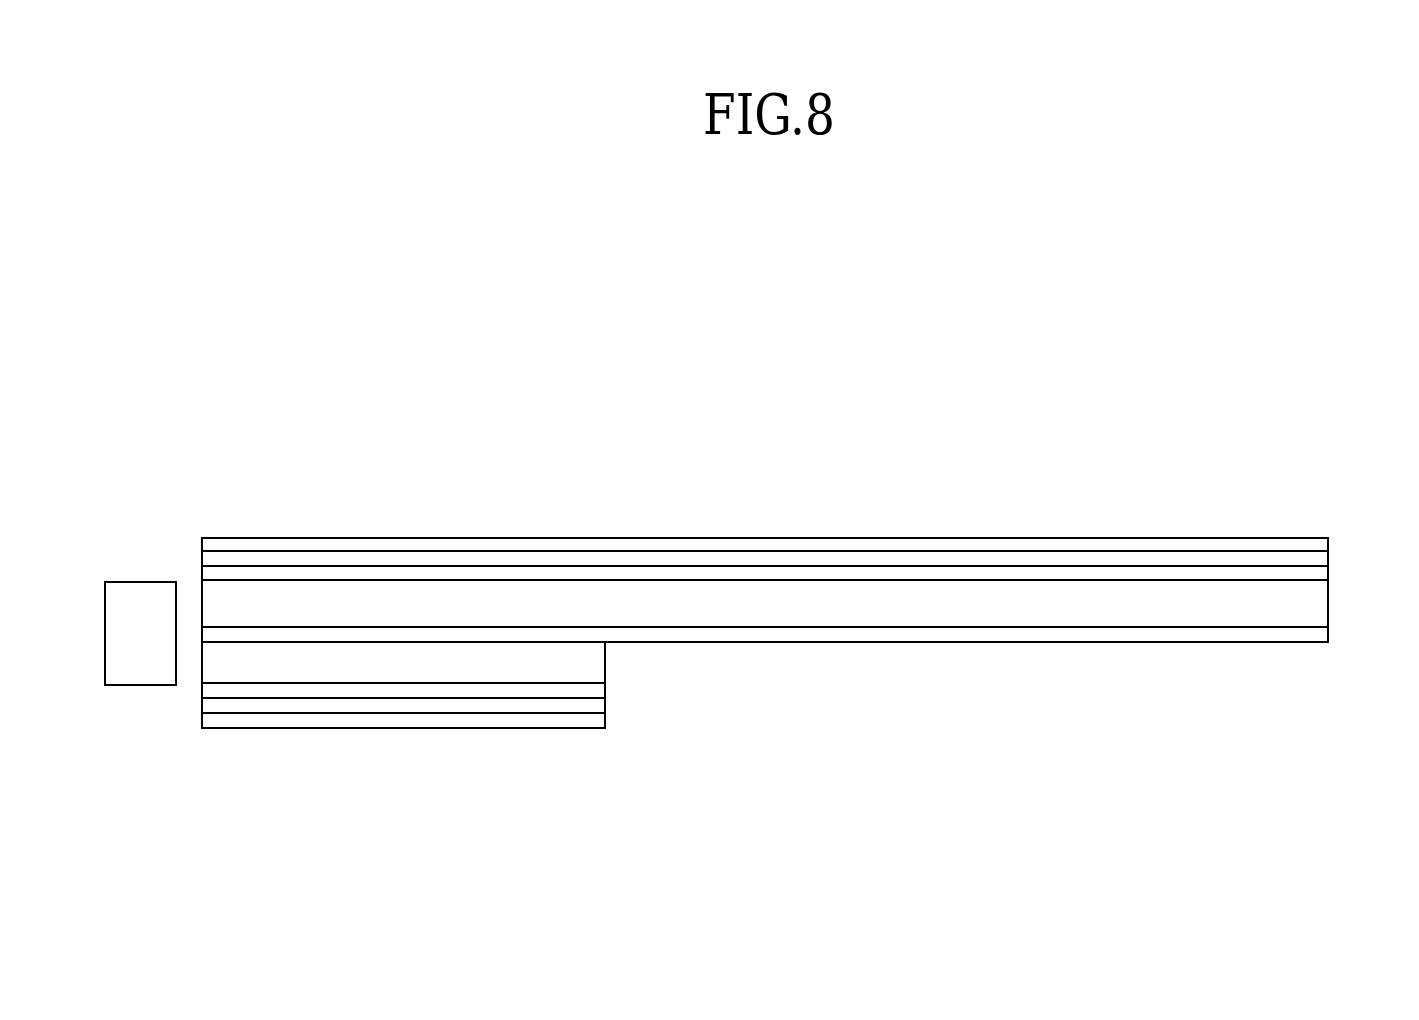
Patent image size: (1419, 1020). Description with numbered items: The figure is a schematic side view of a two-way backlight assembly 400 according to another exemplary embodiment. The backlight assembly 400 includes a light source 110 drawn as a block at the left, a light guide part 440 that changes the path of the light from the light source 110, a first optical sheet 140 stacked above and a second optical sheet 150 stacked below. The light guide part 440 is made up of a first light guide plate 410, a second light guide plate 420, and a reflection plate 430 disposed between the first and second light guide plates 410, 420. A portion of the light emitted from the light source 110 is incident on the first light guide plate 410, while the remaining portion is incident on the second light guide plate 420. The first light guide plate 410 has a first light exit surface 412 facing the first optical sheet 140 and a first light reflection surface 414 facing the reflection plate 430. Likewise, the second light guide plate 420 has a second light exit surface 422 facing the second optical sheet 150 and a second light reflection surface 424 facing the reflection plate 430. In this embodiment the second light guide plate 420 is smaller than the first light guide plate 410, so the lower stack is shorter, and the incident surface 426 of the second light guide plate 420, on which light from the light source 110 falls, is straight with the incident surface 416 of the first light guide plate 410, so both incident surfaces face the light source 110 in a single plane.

The backlight assembly 400 is at (722, 483).
The light source 110 is at (157, 587).
The incident surface of the first light guide plate 416 is at (202, 595).
The first optical sheet 140 is at (1336, 537).
The first light exit surface 412 is at (328, 580).
The first light reflection surface 414 is at (450, 627).
The first light guide plate 410 is at (1018, 602).
The reflection plate 430 is at (1097, 633).
The second light guide plate 420 is at (593, 664).
The light guide part 440 is at (1118, 756).
The second optical sheet 150 is at (611, 683).
The incident surface of the second light guide plate 426 is at (200, 677).
The second light reflection surface 424 is at (328, 645).
The second light exit surface 422 is at (443, 685).